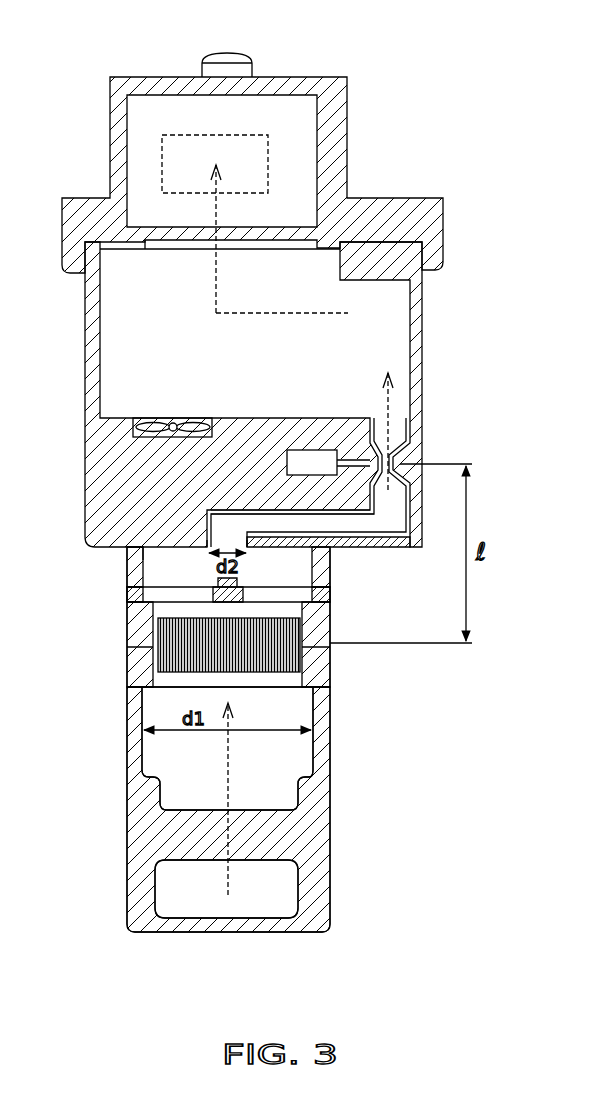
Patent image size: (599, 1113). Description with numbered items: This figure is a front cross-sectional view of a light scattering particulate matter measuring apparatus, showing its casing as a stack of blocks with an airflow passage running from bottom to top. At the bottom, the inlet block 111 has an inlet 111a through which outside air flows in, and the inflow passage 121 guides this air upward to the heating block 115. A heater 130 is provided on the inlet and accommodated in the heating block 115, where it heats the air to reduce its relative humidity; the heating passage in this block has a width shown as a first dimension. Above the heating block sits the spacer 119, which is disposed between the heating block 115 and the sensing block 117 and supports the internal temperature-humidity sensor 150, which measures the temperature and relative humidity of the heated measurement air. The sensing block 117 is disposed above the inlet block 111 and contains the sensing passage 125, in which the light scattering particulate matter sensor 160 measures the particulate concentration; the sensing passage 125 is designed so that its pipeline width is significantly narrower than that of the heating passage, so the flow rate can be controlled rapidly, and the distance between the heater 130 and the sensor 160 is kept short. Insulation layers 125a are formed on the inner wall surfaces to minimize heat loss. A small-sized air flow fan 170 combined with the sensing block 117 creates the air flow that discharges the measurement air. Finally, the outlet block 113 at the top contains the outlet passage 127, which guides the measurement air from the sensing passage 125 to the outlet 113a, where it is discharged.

The outlet block 113 is at (147, 78).
The outlet 113a is at (162, 152).
The outlet passage 127 is at (142, 185).
The small-sized air flow fan 170 is at (160, 418).
The sensing block 117 is at (105, 457).
The light scattering particulate matter sensor 160 is at (312, 450).
The sensing passage 125 is at (420, 503).
The insulation layer 125a is at (393, 548).
The spacer 119 is at (125, 560).
The internal temperature-humidity sensor 150 is at (215, 582).
The heating block 115 is at (138, 622).
The heater 130 is at (165, 662).
The inflow passage 121 is at (272, 750).
The inlet block 111 is at (135, 823).
The inlet 111a is at (155, 890).